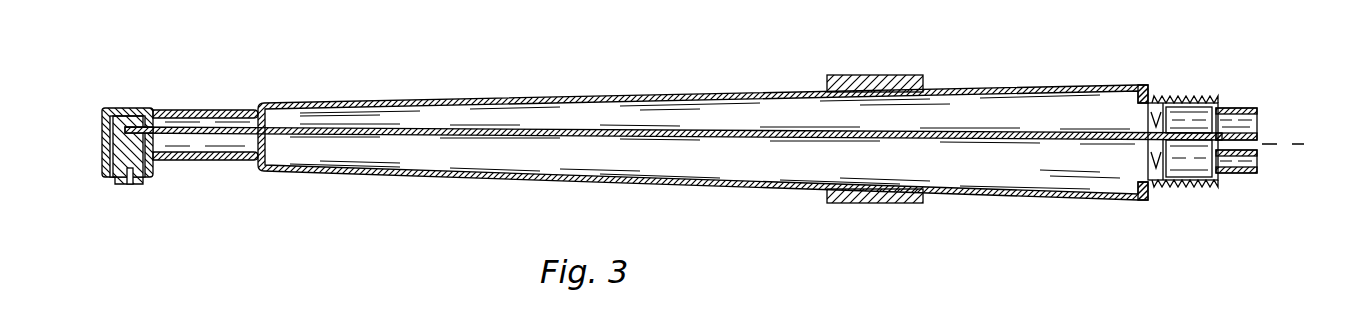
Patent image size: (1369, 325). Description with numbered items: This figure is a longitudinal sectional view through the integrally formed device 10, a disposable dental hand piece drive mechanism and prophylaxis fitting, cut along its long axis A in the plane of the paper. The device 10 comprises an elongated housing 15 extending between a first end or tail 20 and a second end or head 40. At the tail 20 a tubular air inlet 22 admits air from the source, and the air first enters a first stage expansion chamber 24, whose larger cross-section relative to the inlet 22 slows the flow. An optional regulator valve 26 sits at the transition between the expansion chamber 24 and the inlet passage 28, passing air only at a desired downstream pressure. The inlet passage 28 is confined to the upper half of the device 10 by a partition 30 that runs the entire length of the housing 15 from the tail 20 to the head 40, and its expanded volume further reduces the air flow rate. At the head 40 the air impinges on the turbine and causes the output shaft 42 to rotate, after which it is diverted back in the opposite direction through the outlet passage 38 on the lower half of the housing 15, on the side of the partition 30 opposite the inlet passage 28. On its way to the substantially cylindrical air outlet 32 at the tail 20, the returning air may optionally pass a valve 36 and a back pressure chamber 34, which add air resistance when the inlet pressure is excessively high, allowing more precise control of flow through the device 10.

The integrally formed device 10 is at (674, 73).
The housing 15 is at (517, 199).
The first end or tail 20 is at (1248, 101).
The tubular air inlet 22 is at (1258, 119).
The first stage expansion chamber 24 is at (1178, 103).
The regulator valve 26 is at (1147, 121).
The inlet passage 28 is at (1133, 97).
The partition 30 is at (638, 127).
The air outlet 32 is at (1243, 166).
The back pressure chamber 34 is at (1192, 167).
The valve 36 is at (1148, 168).
The outlet passage 38 is at (1073, 167).
The second end or head 40 is at (153, 99).
The output shaft 42 is at (143, 188).
The long axis A is at (1287, 152).